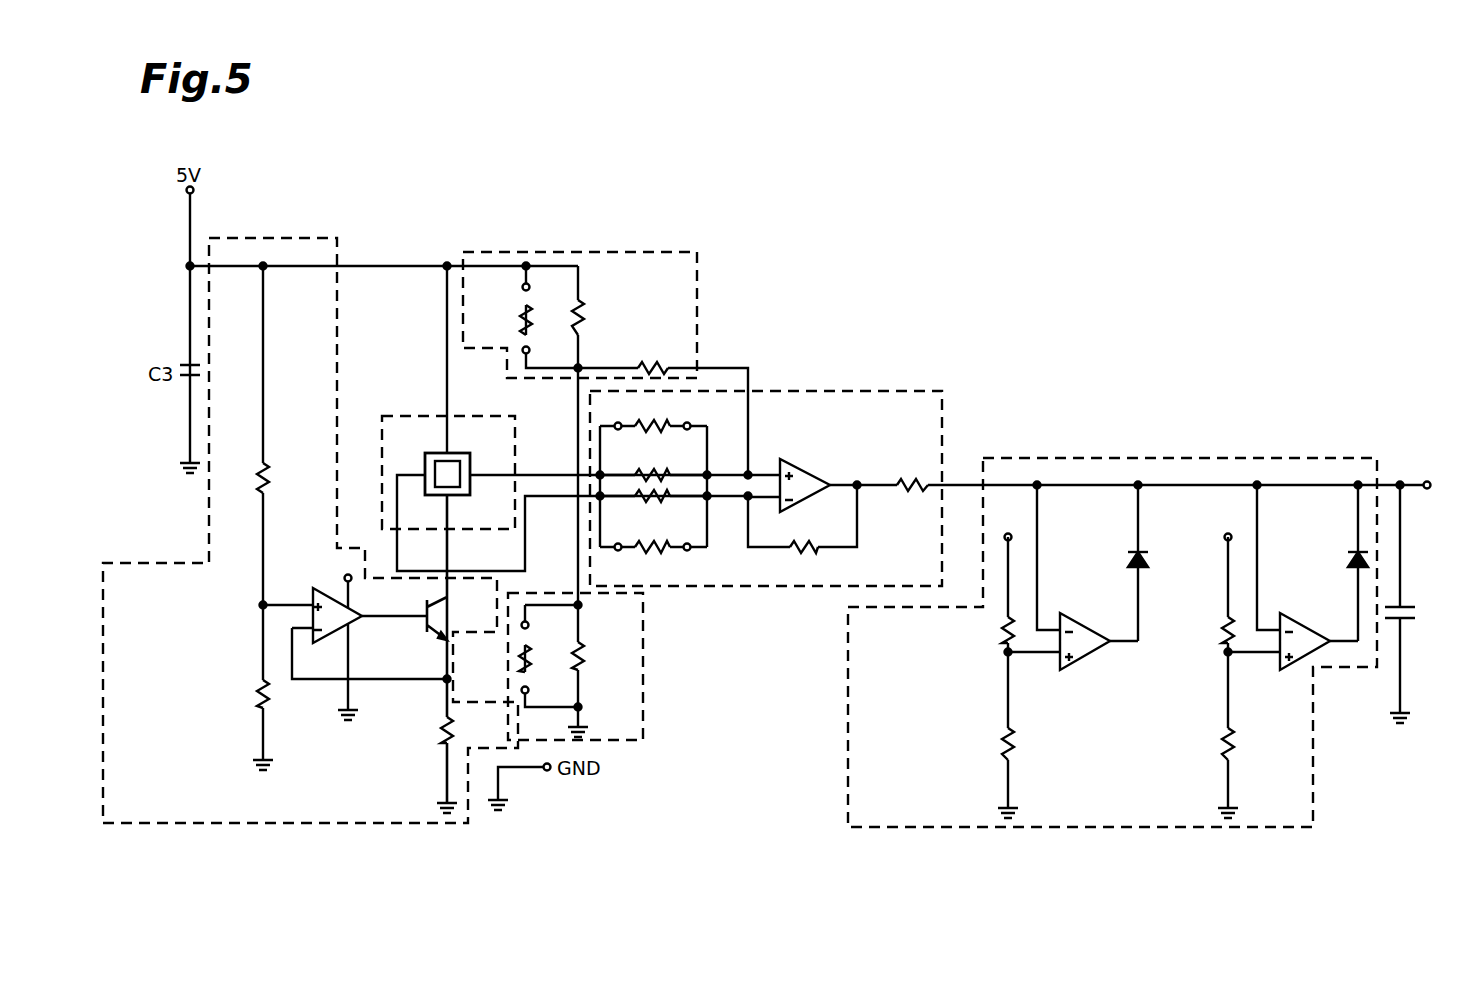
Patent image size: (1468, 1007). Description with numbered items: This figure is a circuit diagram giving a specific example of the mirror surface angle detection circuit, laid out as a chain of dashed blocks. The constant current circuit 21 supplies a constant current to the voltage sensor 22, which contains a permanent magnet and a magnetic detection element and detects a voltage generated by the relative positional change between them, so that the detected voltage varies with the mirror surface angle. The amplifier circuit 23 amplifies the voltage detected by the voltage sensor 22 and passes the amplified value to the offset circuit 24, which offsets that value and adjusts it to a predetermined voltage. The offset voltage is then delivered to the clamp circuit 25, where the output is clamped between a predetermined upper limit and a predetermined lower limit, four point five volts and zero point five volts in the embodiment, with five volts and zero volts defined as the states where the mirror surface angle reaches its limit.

The constant current circuit 21 is at (310, 518).
The voltage sensor 22 is at (567, 418).
The amplifier circuit 23 is at (1002, 463).
The offset circuit 24 is at (576, 484).
The clamp circuit 25 is at (1147, 629).